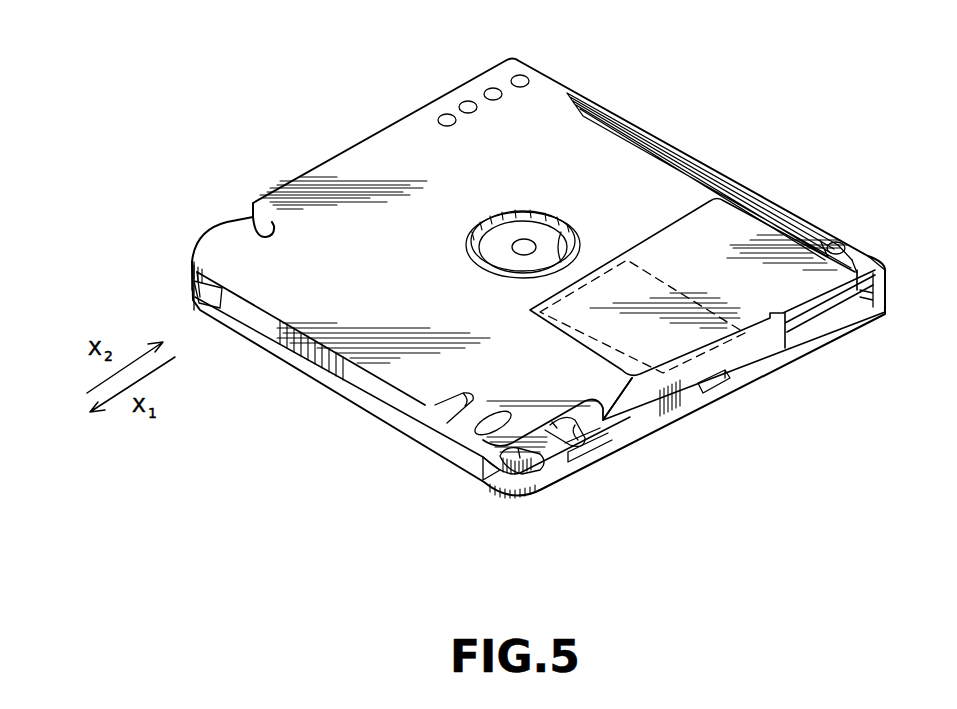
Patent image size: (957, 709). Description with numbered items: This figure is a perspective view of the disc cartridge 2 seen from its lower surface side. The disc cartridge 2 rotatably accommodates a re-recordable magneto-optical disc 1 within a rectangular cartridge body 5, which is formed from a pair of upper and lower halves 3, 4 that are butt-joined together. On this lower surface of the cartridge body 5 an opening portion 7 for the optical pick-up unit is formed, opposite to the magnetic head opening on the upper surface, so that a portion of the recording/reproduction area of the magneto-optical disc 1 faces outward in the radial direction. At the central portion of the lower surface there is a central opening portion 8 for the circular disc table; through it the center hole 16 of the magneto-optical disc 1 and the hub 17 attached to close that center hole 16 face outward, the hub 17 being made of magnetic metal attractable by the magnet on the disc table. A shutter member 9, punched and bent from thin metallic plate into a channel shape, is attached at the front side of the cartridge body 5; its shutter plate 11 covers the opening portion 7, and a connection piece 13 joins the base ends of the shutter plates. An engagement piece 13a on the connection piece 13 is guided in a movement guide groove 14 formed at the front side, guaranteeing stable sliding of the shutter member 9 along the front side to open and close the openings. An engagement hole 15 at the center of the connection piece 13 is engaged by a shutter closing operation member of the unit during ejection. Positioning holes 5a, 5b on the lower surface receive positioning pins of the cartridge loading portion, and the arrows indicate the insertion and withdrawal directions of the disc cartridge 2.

The magneto-optical disc 1 is at (470, 262).
The disc cartridge 2 is at (727, 135).
The lower half 3 is at (192, 296).
The upper half 4 is at (192, 256).
The cartridge body 5 is at (128, 236).
The positioning hole 5a is at (490, 432).
The positioning hole 5b is at (838, 243).
The opening portion for optical pick-up unit 7 is at (548, 321).
The central opening portion for disc table 8 is at (578, 232).
The shutter member 9 is at (762, 372).
The shutter plate 11 is at (662, 272).
The connection piece 13 is at (662, 412).
The engagement piece 13a is at (588, 442).
The movement guide groove 14 is at (538, 494).
The engagement hole 15 is at (712, 386).
The center hole 16 is at (500, 222).
The hub 17 is at (519, 238).